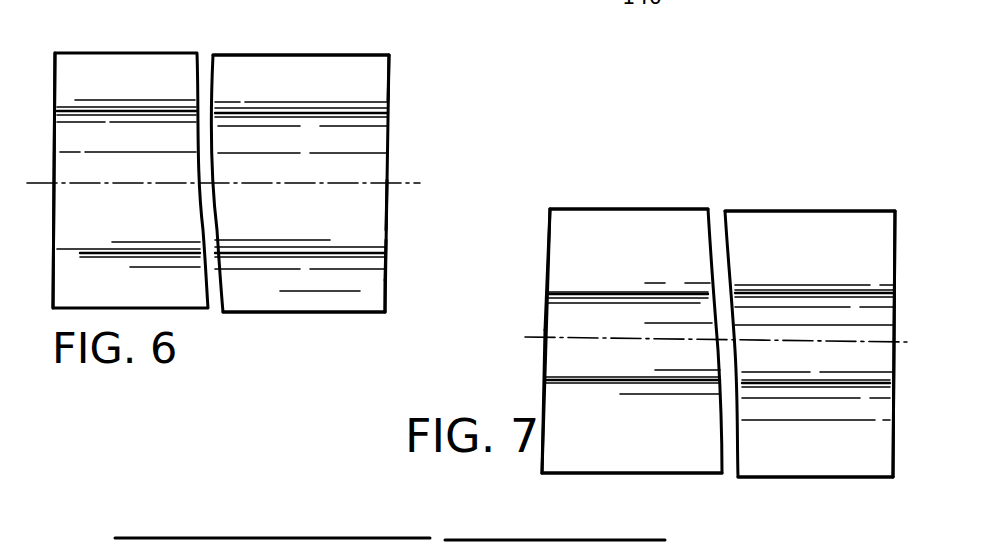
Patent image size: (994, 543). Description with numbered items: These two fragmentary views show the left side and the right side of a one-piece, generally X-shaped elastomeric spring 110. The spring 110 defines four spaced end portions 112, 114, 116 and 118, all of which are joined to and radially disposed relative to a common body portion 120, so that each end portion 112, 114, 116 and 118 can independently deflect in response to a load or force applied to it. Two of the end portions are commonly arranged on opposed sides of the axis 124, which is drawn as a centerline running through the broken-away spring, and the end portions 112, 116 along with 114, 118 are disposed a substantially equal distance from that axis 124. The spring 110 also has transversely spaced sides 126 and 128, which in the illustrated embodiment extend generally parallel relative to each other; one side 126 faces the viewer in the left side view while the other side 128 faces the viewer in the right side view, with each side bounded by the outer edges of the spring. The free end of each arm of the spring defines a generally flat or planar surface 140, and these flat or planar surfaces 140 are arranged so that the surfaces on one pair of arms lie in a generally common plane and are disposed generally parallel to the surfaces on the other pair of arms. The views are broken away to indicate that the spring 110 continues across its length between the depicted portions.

In FIG. 6, the elastomeric spring 110 is at (403, 138).
In FIG. 7, the elastomeric spring 110 is at (626, 198).
In FIG. 6, the end portion 112 is at (378, 75).
In FIG. 7, the end portion 112 is at (276, 538).
In FIG. 7, the end portion 114 is at (815, 222).
In FIG. 6, the end portion 116 is at (368, 300).
In FIG. 7, the end portion 118 is at (798, 465).
In FIG. 6, the common body portion 120 is at (372, 198).
In FIG. 7, the common body portion 120 is at (548, 362).
In FIG. 6, the axis 124 is at (421, 166).
In FIG. 7, the axis 124 is at (620, 338).
In FIG. 6, the side 126 is at (52, 72).
In FIG. 7, the side 126 is at (896, 240).
In FIG. 6, the side 128 is at (382, 258).
In FIG. 7, the side 128 is at (548, 257).
In FIG. 6, the flat or planar surface 140 is at (323, 55).
In FIG. 7, the flat or planar surface 140 is at (575, 209).